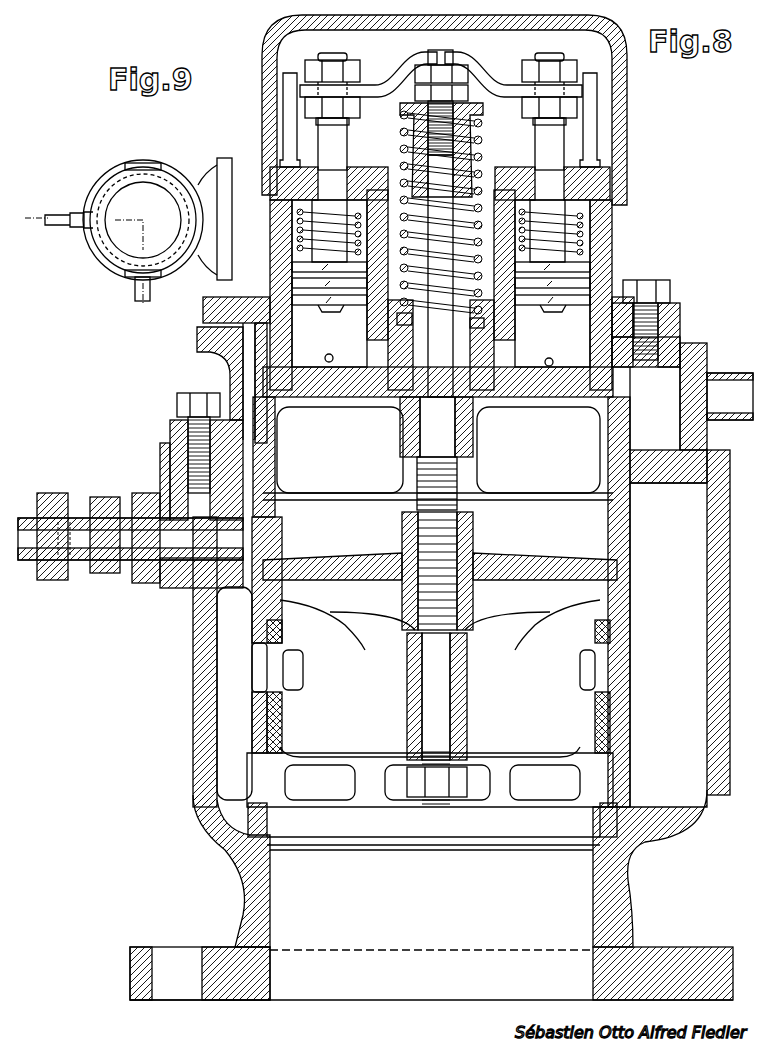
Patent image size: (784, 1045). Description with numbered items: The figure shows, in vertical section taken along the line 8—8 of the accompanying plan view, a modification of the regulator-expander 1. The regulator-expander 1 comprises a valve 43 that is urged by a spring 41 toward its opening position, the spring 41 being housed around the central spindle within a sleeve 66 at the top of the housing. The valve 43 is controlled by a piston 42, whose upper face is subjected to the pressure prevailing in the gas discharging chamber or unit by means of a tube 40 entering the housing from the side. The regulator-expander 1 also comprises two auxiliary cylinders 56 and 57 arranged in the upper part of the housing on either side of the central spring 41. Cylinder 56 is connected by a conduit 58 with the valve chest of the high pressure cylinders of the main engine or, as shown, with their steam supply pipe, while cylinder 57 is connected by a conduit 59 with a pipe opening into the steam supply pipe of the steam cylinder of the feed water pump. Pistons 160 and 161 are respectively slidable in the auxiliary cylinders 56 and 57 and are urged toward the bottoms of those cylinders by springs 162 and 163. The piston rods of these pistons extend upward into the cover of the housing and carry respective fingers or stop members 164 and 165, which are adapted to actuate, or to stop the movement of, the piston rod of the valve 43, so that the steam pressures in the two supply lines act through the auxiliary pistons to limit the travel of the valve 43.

In FIG. 8, the regulator-expander 1 is at (723, 632).
In FIG. 8, the tube 40 is at (731, 380).
In FIG. 8, the spring 41 is at (450, 171).
In FIG. 8, the piston 42 is at (604, 452).
In FIG. 8, the valve 43 is at (597, 720).
In FIG. 8, the auxiliary cylinder 56 is at (297, 312).
In FIG. 8, the auxiliary cylinder 57 is at (584, 320).
In FIG. 8, the conduit 58 is at (338, 349).
In FIG. 8, the conduit 59 is at (560, 350).
In FIG. 8, the spring sleeve 66 is at (481, 144).
In FIG. 8, the piston 160 is at (330, 291).
In FIG. 8, the piston 161 is at (552, 291).
In FIG. 8, the spring 162 is at (297, 232).
In FIG. 8, the spring 163 is at (583, 229).
In FIG. 8, the finger or stop member 164 is at (417, 43).
In FIG. 8, the finger or stop member 165 is at (467, 43).
In FIG. 9, the section line 8 is at (92, 262).